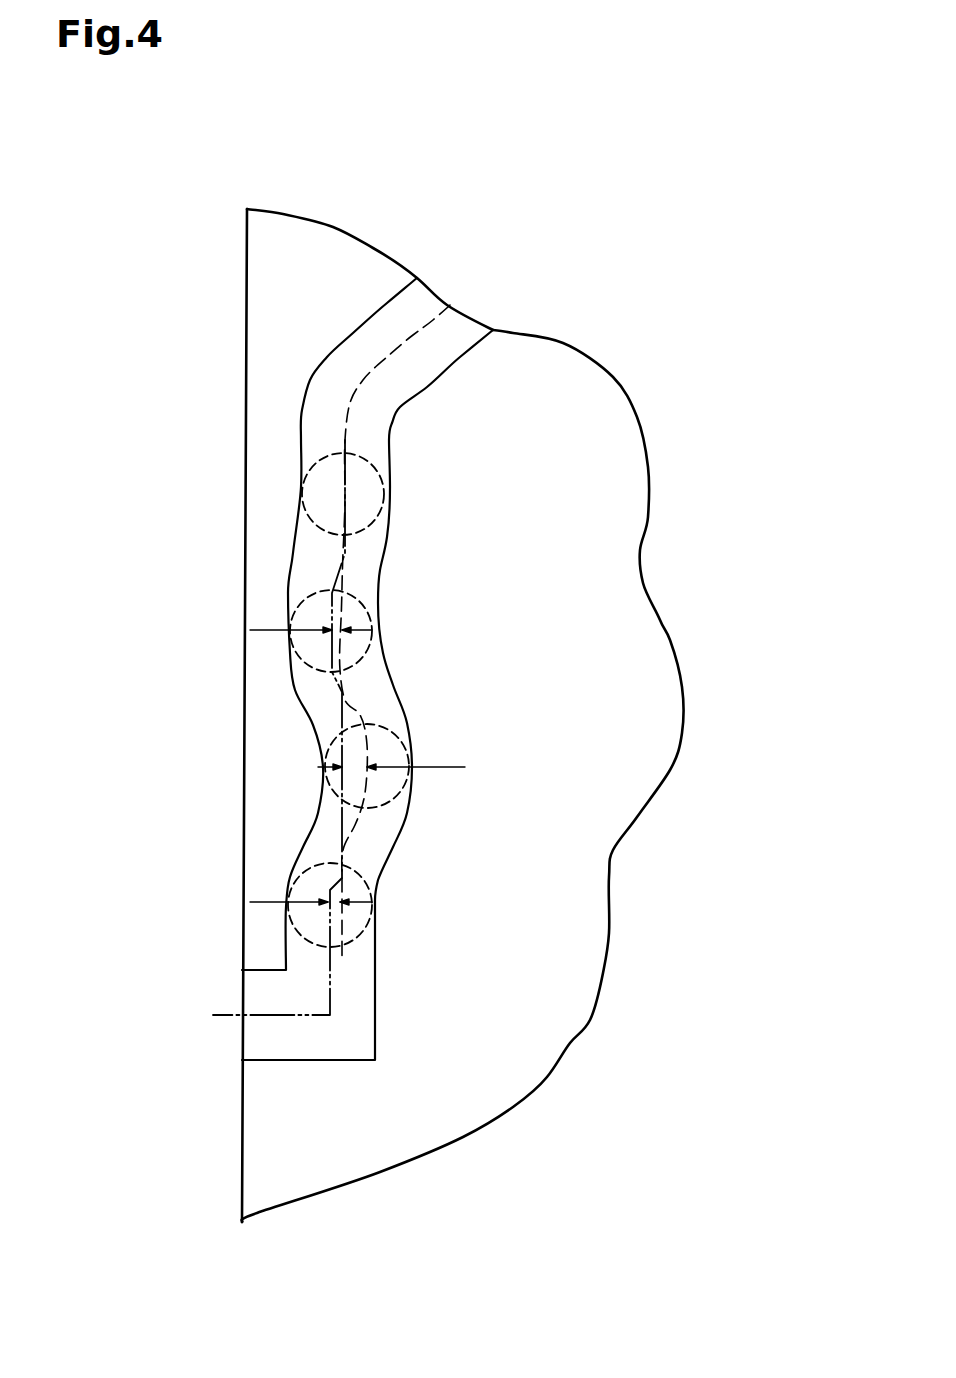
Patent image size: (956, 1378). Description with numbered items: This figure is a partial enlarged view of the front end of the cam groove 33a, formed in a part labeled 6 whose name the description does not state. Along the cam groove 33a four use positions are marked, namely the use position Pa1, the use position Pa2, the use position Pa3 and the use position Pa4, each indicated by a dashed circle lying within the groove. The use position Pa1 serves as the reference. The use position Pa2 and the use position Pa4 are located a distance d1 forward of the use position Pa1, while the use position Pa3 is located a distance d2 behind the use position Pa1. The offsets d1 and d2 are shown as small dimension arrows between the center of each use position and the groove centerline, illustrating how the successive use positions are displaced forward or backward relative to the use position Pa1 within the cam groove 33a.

The workpiece 6 is at (247, 340).
The cam groove 33a is at (388, 553).
The use position Pa1 is at (312, 468).
The use position Pa2 is at (304, 664).
The use position Pa3 is at (346, 803).
The use position Pa4 is at (316, 942).
The distance d1 is at (337, 620).
The distance d2 is at (357, 762).